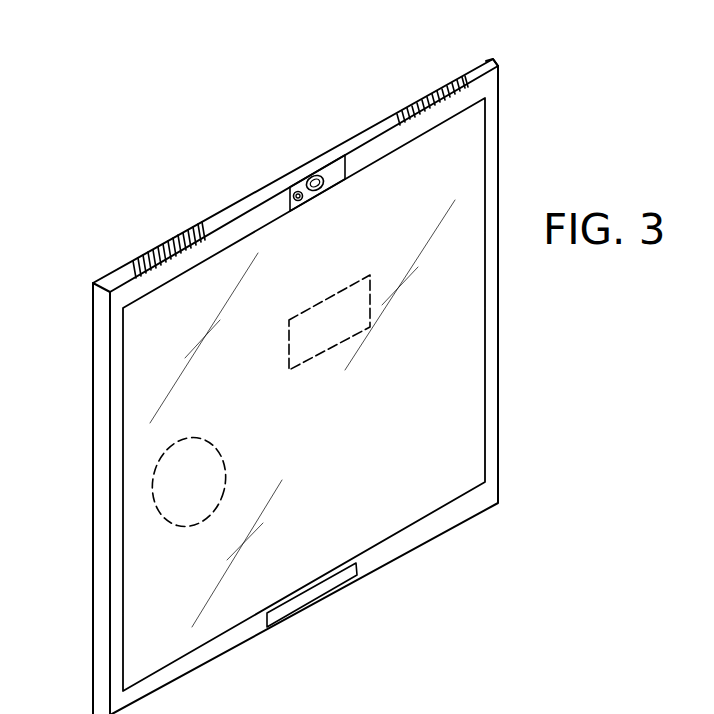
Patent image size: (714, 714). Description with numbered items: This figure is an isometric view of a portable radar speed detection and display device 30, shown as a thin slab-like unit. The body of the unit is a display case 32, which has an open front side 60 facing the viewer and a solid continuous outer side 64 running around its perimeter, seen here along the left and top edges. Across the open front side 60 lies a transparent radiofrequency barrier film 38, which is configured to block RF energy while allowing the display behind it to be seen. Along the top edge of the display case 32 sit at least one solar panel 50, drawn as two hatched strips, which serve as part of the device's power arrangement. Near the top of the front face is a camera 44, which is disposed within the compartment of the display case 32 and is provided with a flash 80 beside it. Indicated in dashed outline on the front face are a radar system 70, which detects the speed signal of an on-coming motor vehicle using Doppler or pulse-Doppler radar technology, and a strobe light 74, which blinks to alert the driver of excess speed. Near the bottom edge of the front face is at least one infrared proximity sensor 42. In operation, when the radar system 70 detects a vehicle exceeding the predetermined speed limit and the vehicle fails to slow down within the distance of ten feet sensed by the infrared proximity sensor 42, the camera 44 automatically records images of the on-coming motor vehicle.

The portable radar speed detection and display device 30 is at (212, 225).
The display case 32 is at (486, 63).
The transparent radiofrequency barrier film 38 is at (478, 330).
The infrared proximity sensor 42 is at (335, 583).
The camera 44 is at (337, 172).
The solar panel 50 is at (151, 250).
The open front side 60 is at (490, 122).
The solid continuous outer side 64 is at (103, 452).
The radar system 70 is at (158, 517).
The strobe light 74 is at (310, 328).
The flash 80 is at (298, 190).